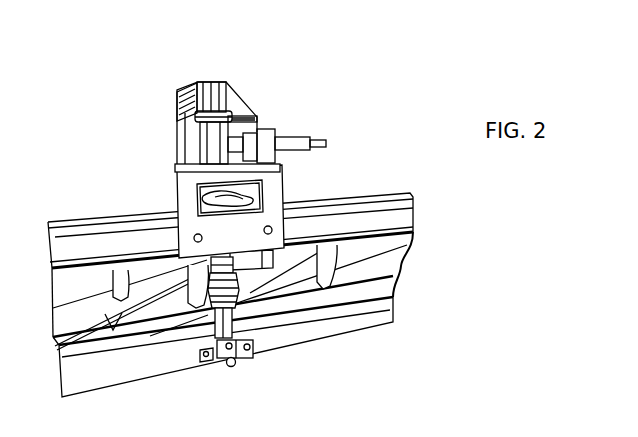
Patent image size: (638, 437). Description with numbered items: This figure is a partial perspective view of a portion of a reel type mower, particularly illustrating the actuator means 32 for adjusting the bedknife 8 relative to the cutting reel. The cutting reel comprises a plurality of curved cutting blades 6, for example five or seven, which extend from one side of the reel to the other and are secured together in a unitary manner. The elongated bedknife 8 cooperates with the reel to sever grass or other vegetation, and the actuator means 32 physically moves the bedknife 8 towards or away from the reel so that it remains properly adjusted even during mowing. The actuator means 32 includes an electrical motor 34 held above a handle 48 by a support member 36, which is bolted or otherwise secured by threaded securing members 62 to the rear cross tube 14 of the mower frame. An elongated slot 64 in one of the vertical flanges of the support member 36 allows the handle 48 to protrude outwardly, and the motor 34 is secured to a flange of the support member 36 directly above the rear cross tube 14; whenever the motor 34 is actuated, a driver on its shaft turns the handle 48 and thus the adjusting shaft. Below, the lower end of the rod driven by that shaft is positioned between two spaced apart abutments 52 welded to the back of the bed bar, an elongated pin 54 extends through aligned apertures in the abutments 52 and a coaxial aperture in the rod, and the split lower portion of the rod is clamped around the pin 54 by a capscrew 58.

The curved cutting blades 6 is at (396, 256).
The bedknife 8 is at (126, 373).
The rear cross tube 14 is at (356, 203).
The actuator means 32 is at (279, 127).
The electrical motor 34 is at (213, 81).
The support member 36 is at (270, 187).
The handle 48 is at (206, 193).
The abutments 52 is at (252, 353).
The pin 54 is at (204, 355).
The capscrew 58 is at (235, 365).
The threaded securing members 62 is at (193, 239).
The elongated slot 64 is at (254, 211).